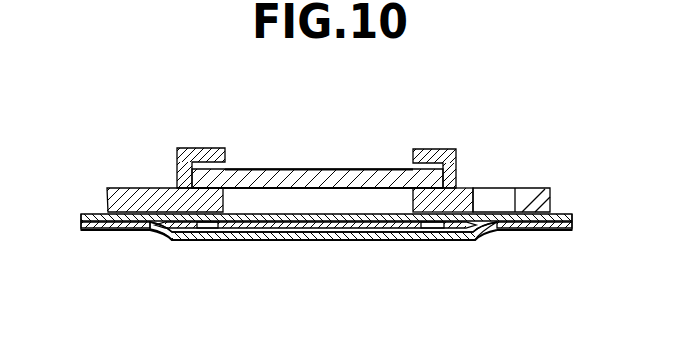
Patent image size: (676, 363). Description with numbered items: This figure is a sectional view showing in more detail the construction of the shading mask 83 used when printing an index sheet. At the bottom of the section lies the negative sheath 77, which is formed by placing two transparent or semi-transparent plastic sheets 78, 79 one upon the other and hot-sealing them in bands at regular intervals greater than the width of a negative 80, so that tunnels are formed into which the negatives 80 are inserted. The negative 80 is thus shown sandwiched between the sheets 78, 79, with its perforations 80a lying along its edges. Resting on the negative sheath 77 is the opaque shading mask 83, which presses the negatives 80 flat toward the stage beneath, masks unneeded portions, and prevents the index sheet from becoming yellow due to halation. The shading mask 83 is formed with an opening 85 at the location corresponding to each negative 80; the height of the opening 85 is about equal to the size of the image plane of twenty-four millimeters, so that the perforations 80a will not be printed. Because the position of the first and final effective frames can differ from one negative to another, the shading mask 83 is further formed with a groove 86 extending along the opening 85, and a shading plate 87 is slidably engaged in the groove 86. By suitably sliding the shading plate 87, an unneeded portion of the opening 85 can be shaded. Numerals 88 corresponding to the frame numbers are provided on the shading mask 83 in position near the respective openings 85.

The negative sheath 77 is at (532, 235).
The transparent or semi-transparent plastic sheet 78 is at (355, 187).
The transparent or semi-transparent plastic sheet 79 is at (363, 240).
The negative 80 is at (278, 240).
The perforations 80a is at (206, 229).
The shading mask 83 is at (152, 186).
The opening 85 is at (310, 229).
The groove 86 is at (208, 168).
The shading plate 87 is at (287, 170).
The numerals 88 is at (494, 196).